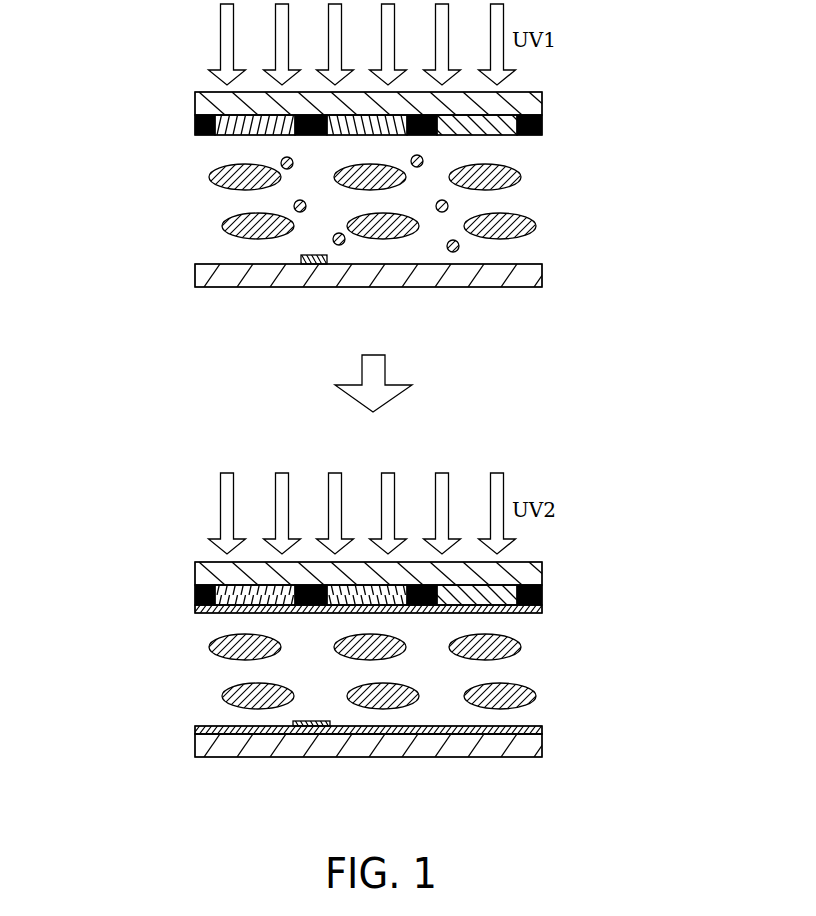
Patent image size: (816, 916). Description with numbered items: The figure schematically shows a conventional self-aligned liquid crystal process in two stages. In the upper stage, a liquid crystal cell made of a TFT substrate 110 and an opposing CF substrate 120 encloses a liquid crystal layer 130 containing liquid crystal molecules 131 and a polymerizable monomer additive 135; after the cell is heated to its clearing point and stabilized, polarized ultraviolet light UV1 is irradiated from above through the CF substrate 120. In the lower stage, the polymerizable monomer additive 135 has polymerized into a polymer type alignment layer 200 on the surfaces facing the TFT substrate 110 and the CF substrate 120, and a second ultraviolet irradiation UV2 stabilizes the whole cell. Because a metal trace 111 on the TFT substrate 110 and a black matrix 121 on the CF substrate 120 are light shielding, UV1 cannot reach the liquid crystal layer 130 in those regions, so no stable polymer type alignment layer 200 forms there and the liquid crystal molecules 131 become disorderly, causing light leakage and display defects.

The TFT substrate 110 is at (542, 275).
The metal trace 111 is at (303, 261).
The CF substrate 120 is at (542, 122).
The black matrix 121 is at (196, 118).
The liquid crystal layer 130 is at (533, 217).
The liquid crystal molecules 131 is at (240, 224).
The polymerizable monomer additive 135 is at (282, 161).
The polymer type alignment layer 200 is at (196, 610).